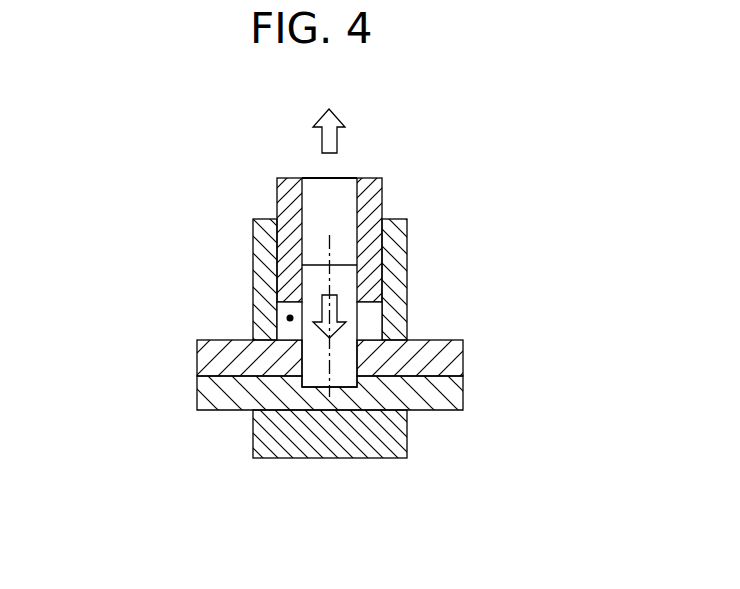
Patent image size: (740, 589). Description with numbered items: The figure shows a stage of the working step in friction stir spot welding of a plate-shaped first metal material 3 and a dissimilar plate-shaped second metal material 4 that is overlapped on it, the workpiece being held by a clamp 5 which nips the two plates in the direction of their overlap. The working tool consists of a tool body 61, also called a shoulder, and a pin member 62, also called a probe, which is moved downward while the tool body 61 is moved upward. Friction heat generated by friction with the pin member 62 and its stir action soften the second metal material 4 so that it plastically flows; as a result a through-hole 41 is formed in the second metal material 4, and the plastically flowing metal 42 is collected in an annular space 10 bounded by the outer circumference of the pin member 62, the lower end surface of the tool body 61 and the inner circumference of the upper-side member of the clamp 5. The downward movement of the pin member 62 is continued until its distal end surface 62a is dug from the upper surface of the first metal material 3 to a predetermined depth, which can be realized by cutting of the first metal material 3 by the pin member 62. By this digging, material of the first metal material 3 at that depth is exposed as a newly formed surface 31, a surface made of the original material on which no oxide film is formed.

The first metal material 3 is at (461, 392).
The second metal material 4 is at (463, 351).
The clamp 5 is at (253, 435).
The annular space 10 is at (290, 318).
The newly formed surface 31 is at (319, 387).
The through-hole 41 is at (373, 421).
The plastically flowing metal 42 is at (372, 318).
The tool body 61 is at (288, 178).
The pin member 62 is at (355, 318).
The distal end surface 62a is at (355, 362).